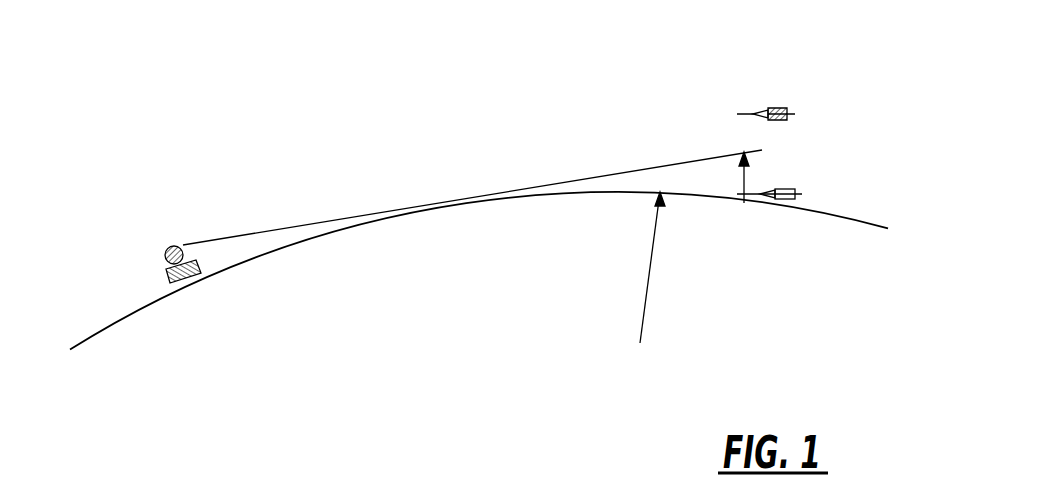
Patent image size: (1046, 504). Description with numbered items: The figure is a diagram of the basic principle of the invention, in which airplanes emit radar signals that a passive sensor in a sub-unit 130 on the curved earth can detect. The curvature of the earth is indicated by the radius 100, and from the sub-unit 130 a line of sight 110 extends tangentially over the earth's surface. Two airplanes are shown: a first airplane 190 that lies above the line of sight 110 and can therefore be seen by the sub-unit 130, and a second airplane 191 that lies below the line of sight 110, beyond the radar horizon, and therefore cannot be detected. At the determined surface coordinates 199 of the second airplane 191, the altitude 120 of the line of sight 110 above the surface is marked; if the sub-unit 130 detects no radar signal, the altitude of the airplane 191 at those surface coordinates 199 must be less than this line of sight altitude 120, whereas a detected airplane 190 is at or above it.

The radius 100 is at (655, 291).
The line of sight 110 is at (299, 218).
The altitude 120 is at (752, 180).
The sub-unit 130 is at (167, 233).
The first airplane 190 is at (778, 98).
The second airplane 191 is at (797, 180).
The surface coordinates 199 is at (744, 212).